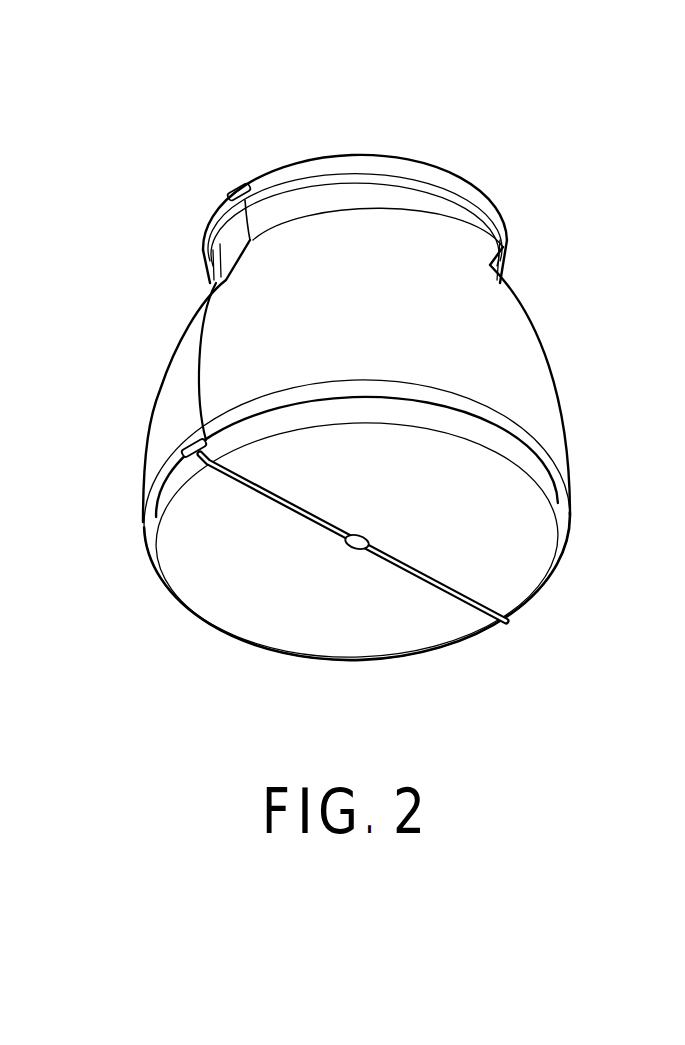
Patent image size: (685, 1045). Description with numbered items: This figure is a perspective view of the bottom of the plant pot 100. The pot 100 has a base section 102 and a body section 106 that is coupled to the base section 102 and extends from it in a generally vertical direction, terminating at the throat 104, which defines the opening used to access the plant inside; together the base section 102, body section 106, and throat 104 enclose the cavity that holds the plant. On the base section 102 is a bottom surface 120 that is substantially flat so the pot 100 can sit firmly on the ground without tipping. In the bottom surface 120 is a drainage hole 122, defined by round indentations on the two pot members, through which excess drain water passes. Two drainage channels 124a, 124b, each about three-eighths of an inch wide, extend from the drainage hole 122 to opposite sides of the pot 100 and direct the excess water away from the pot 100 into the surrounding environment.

The plant pot 100 is at (366, 374).
The base section 102 is at (572, 520).
The throat 104 is at (503, 234).
The body section 106 is at (527, 355).
The bottom surface 120 is at (238, 592).
The drainage hole 122 is at (352, 548).
The drainage channel 124a is at (158, 518).
The drainage channel 124b is at (478, 597).